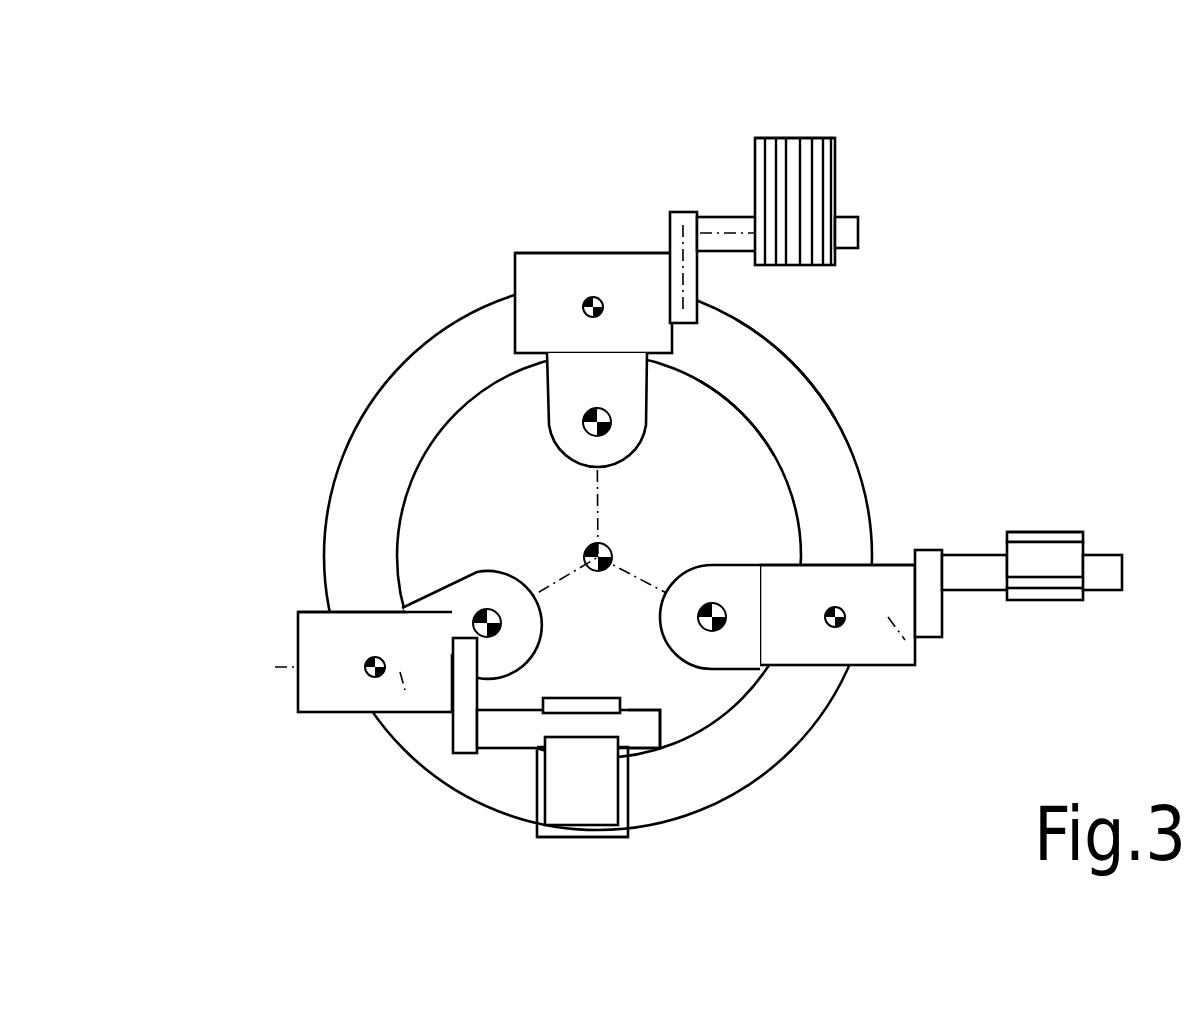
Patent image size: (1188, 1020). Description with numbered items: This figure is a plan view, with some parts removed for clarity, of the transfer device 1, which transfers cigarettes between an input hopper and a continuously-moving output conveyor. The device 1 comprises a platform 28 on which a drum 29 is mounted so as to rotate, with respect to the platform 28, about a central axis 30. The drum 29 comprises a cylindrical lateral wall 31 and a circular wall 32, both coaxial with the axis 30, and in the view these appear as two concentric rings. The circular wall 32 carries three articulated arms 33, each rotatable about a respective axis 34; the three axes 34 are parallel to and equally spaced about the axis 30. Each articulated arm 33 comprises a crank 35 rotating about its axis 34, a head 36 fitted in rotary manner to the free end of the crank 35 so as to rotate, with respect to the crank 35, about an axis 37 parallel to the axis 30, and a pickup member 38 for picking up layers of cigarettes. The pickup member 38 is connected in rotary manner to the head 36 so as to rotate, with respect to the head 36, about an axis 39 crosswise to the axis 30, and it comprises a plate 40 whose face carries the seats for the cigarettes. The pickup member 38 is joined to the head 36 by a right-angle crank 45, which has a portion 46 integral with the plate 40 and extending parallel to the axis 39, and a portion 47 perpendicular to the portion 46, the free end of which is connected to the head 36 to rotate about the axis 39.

The transfer device 1 is at (318, 328).
The platform 28 is at (848, 490).
The drum 29 is at (804, 456).
The axis 30 is at (614, 550).
The cylindrical lateral wall 31 is at (738, 408).
The circular wall 32 is at (725, 445).
The articulated arm 33 is at (591, 240).
The axis 34 is at (597, 422).
The crank 35 is at (632, 447).
The head 36 is at (552, 272).
The axis 37 is at (590, 306).
The pickup member 38 is at (856, 183).
The axis 39 is at (550, 311).
The plate 40 is at (807, 140).
The right-angle crank 45 is at (714, 200).
The portion 46 is at (858, 232).
The portion 47 is at (690, 295).